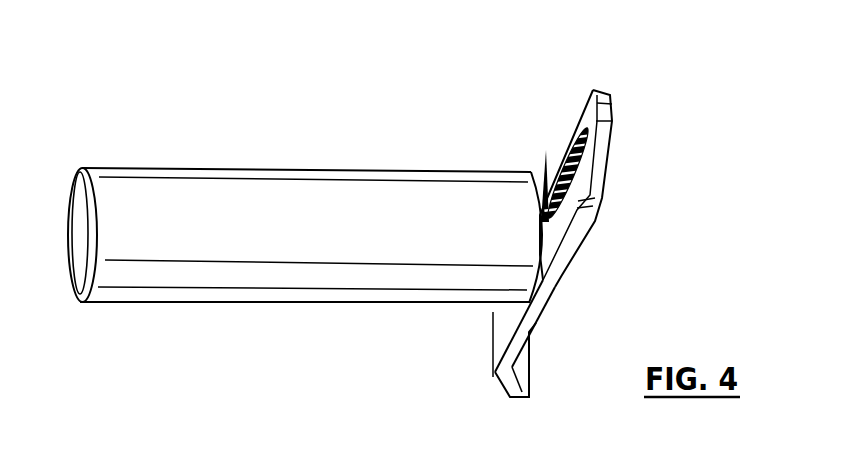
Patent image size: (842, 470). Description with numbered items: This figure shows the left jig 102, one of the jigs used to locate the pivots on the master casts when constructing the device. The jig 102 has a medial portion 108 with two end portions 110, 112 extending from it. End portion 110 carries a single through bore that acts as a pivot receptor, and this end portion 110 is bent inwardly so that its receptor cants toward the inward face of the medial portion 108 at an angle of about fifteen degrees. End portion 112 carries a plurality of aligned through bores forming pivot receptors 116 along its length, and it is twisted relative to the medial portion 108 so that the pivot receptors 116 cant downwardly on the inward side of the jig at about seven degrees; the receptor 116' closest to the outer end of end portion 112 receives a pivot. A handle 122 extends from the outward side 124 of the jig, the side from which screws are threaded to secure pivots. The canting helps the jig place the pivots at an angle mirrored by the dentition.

The left jig 102 is at (482, 72).
The medial portion 108 is at (535, 323).
The end portion 110 is at (497, 378).
The end portion 112 is at (573, 133).
The pivot receptors 116 is at (535, 172).
The pivot receptor 116' is at (613, 165).
The handle 122 is at (357, 168).
The outward side 124 is at (488, 316).